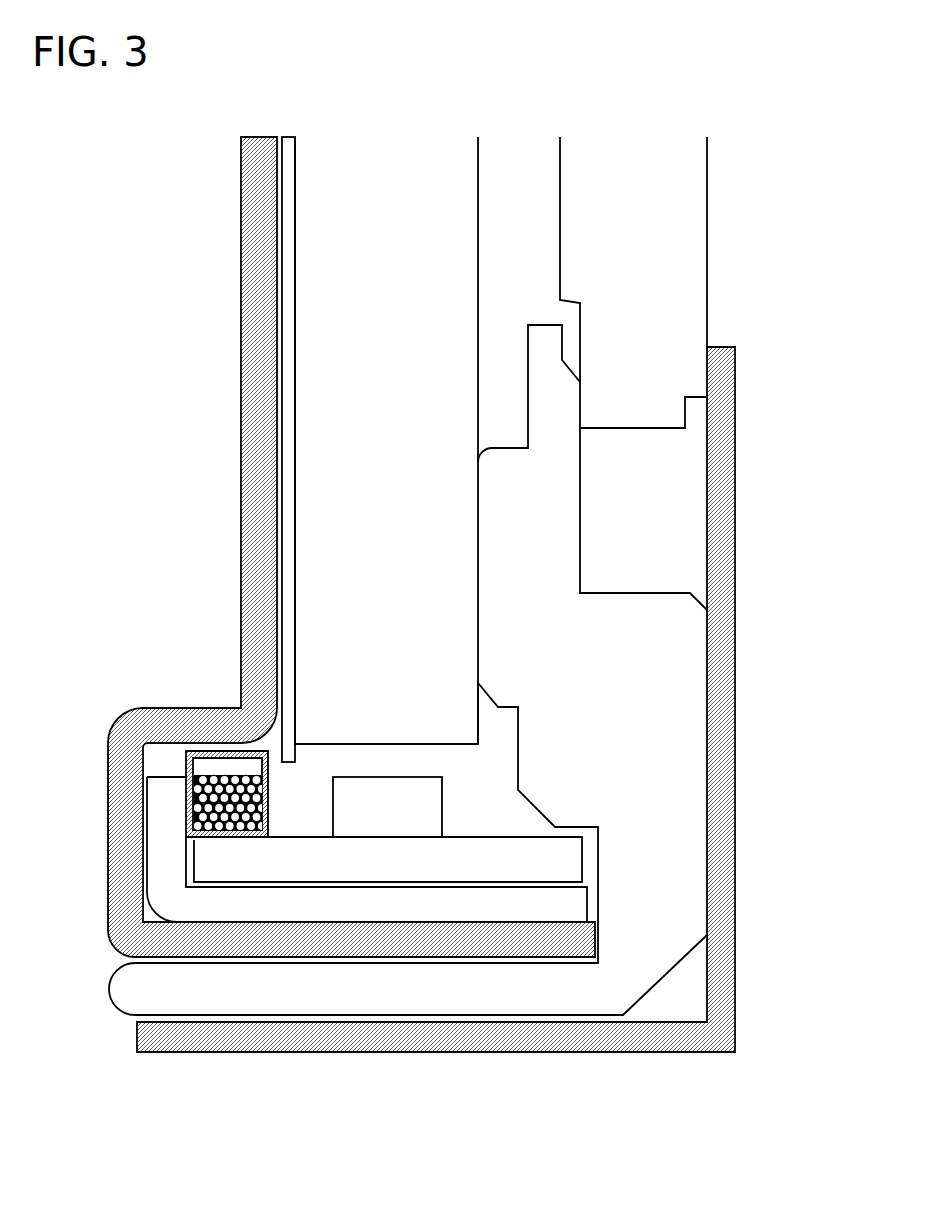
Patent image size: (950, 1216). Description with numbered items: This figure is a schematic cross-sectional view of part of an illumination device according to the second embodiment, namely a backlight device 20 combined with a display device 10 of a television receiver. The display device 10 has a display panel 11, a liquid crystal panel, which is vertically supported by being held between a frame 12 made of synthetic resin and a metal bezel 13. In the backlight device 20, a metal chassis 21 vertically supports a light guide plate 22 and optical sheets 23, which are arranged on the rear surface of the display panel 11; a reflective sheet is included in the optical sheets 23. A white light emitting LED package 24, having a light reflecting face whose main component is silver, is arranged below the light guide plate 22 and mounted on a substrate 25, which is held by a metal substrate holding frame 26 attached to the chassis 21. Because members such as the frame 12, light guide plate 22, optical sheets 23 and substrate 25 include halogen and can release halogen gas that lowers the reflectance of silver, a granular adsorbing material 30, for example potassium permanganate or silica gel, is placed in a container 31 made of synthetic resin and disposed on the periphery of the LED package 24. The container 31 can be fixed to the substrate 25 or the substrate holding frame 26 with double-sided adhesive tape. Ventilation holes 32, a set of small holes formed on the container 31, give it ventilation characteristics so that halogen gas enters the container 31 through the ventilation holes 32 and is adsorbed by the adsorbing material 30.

The display device 10 is at (736, 198).
The display panel 11 is at (649, 229).
The frame 12 is at (631, 727).
The bezel 13 is at (737, 500).
The backlight device 20 is at (200, 198).
The chassis 21 is at (241, 460).
The light guide plate 22 is at (400, 229).
The optical sheets 23 is at (291, 353).
The LED package 24 is at (401, 817).
The substrate 25 is at (401, 875).
The substrate holding frame 26 is at (168, 773).
The adsorbing material 30 is at (213, 776).
The container 31 is at (229, 752).
The ventilation holes 32 is at (268, 762).